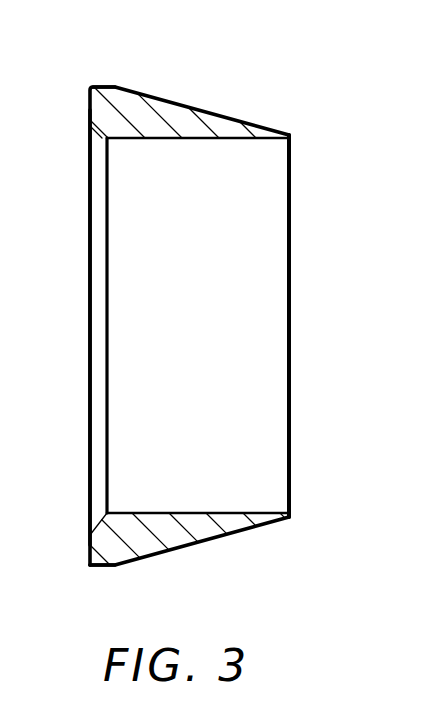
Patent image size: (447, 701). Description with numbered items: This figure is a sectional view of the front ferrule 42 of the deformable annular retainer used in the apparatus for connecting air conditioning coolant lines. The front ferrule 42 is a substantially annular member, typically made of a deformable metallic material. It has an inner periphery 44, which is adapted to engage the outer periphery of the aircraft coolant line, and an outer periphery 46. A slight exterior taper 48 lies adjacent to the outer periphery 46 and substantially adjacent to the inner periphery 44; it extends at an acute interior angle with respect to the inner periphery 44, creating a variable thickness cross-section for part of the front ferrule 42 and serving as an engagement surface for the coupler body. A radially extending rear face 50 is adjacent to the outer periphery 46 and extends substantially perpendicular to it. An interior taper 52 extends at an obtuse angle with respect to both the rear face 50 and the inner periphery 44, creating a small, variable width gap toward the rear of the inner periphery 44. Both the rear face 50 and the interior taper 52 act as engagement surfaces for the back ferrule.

The front ferrule 42 is at (323, 117).
The inner periphery 44 is at (230, 140).
The outer periphery 46 is at (108, 86).
The exterior taper 48 is at (203, 110).
The rear face 50 is at (90, 110).
The interior taper 52 is at (95, 130).